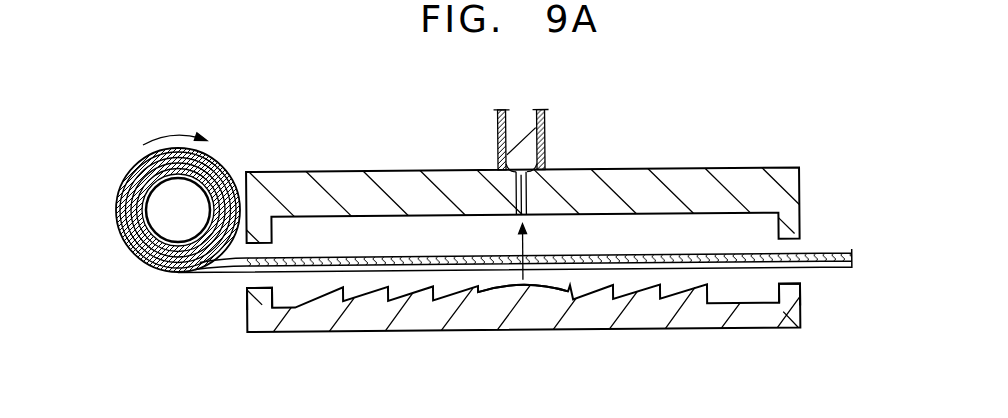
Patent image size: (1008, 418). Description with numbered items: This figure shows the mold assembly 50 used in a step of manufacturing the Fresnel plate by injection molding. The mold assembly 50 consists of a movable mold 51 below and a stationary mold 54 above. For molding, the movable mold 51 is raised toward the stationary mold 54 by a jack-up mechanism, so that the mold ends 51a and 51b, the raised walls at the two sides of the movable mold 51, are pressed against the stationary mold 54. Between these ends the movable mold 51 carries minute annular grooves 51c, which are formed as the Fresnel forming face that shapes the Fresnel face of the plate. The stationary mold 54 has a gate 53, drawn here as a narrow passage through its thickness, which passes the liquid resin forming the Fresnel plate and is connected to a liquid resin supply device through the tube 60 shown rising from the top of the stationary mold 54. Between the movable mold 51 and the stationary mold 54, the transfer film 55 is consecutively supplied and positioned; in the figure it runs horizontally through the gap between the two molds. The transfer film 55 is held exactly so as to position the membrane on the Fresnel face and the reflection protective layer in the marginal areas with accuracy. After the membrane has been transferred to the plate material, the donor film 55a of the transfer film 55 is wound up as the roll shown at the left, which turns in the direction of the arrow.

The mold assembly 50 is at (814, 118).
The movable mold 51 is at (765, 312).
The mold end 51a is at (800, 291).
The mold end 51b is at (262, 297).
The minute annular grooves 51c is at (592, 290).
The gate 53 is at (527, 190).
The stationary mold 54 is at (800, 178).
The transfer film 55 is at (832, 254).
The donor film 55a is at (126, 247).
The supply pipe 60 is at (523, 128).